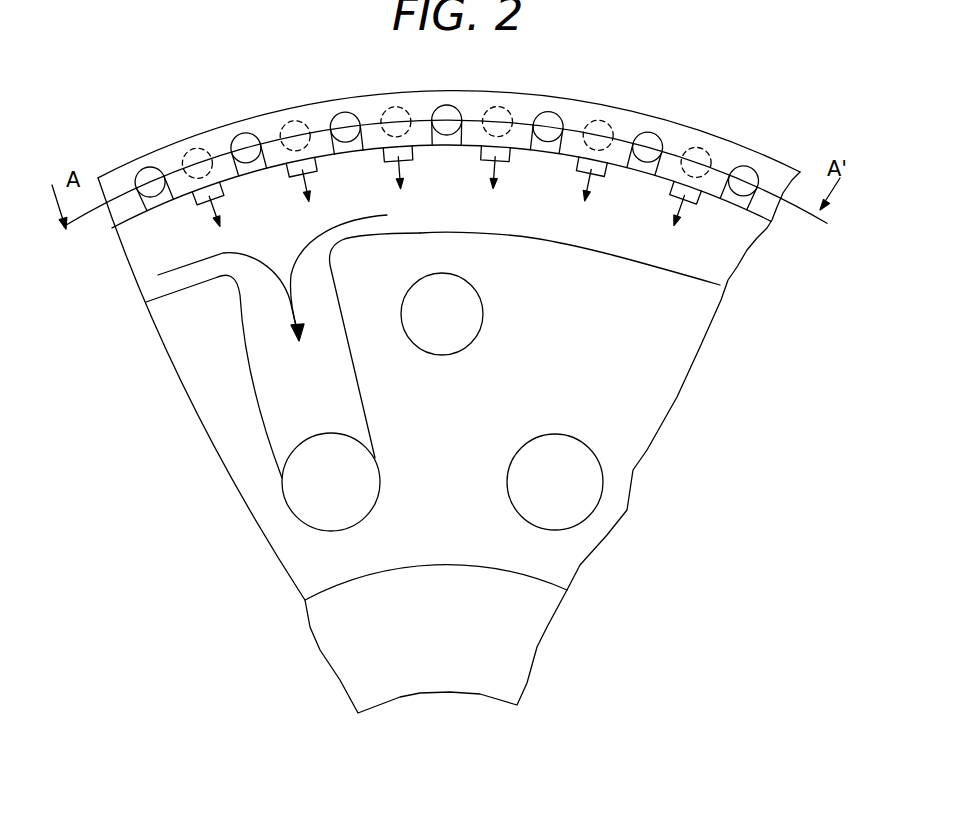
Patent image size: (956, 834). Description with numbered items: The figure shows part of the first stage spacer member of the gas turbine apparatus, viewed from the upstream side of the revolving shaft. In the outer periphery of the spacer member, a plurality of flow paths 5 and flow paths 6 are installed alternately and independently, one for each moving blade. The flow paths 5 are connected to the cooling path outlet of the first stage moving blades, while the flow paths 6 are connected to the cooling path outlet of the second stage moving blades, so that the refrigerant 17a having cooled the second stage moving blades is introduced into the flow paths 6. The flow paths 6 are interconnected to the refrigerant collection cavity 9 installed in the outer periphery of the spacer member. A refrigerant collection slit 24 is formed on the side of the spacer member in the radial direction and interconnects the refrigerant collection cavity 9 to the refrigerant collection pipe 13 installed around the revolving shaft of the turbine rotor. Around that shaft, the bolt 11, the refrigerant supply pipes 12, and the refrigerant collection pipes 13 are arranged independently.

The flow path 5 is at (149, 176).
The flow path 6 is at (196, 162).
The refrigerant collection cavity 9 is at (713, 253).
The bolt 11 is at (466, 310).
The refrigerant supply pipe 12 is at (587, 488).
The refrigerant collection pipe 13 is at (310, 498).
The refrigerant 17a is at (202, 202).
The refrigerant collection slit 24 is at (275, 402).